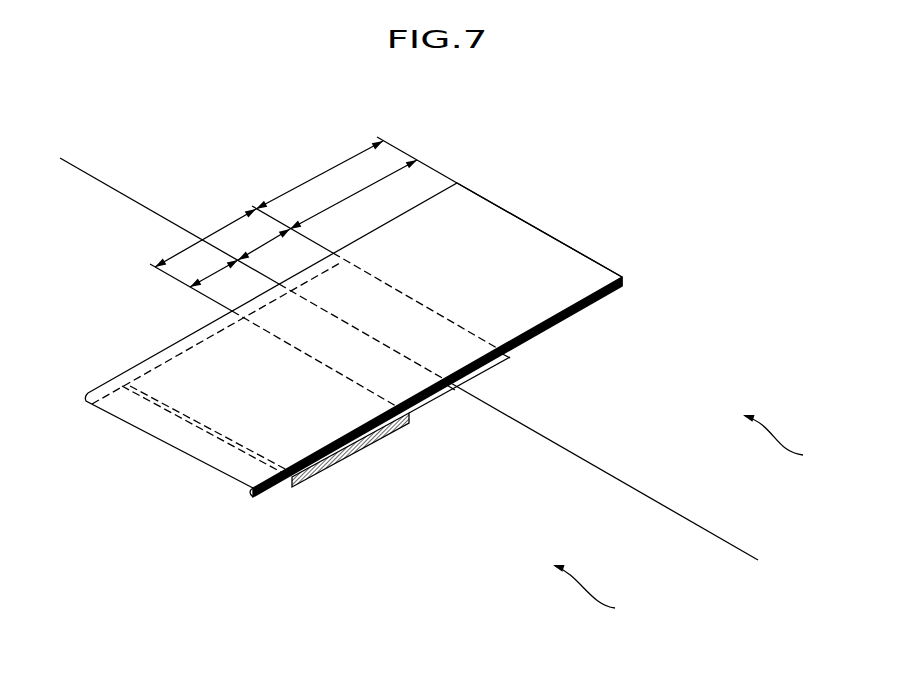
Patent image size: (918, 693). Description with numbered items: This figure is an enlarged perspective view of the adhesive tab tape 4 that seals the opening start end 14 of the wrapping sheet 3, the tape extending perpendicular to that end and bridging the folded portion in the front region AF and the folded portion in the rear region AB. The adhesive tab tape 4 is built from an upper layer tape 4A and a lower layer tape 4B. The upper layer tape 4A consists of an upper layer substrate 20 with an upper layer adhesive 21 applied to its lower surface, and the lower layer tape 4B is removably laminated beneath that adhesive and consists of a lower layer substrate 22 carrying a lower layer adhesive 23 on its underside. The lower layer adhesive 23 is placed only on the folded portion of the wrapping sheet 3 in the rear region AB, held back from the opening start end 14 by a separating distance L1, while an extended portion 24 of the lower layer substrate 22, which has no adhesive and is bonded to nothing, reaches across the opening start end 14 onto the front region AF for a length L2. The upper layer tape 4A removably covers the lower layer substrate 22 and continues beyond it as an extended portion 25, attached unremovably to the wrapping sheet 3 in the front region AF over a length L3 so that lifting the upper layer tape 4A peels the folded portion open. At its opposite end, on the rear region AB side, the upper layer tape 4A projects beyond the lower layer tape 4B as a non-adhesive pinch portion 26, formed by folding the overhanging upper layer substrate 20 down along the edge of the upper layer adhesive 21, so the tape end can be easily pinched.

The wrapping sheet 3 is at (742, 353).
The adhesive tab tape 4 is at (326, 359).
The upper layer tape 4A is at (523, 243).
The lower layer tape 4B is at (320, 476).
The opening start end 14 is at (620, 477).
The upper layer substrate 20 is at (582, 268).
The upper layer adhesive 21 is at (565, 320).
The lower layer substrate 22 is at (433, 400).
The lower layer adhesive 23 is at (353, 458).
The extended portion 24 is at (273, 302).
The extended portion 25 is at (374, 244).
The pinch portion 26 is at (265, 493).
The separating distance L1 is at (210, 268).
The length L2 is at (261, 239).
The length L3 is at (353, 194).
The front region AF is at (793, 447).
The rear region AB is at (605, 599).